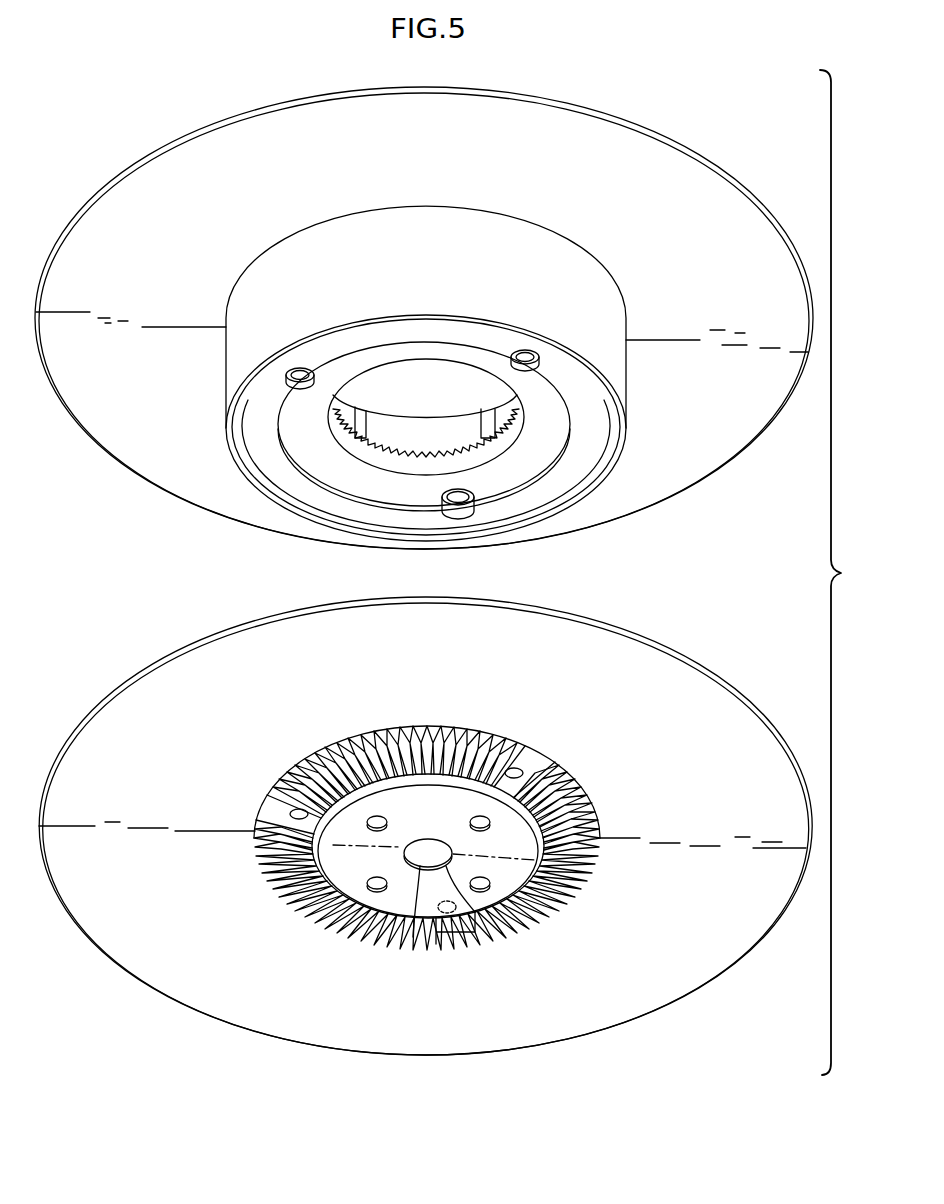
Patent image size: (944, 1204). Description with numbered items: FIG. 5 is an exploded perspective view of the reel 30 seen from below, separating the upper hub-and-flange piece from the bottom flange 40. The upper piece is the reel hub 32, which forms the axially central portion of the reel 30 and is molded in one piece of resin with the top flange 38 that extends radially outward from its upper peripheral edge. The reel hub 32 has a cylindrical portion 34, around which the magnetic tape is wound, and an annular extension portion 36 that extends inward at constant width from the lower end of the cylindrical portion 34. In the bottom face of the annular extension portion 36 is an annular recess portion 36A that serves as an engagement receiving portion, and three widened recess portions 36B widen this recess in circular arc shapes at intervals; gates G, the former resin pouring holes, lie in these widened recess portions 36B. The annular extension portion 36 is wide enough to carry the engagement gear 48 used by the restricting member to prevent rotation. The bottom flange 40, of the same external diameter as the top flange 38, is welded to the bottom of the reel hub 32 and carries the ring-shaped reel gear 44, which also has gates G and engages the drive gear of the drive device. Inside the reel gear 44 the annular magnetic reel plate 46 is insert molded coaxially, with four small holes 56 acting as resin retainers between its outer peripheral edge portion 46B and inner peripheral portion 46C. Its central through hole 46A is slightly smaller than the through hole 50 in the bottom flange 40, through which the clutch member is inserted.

The reel 30 is at (424, 441).
The top flange 38 is at (703, 198).
The reel hub 32 is at (453, 488).
The cylindrical portion 34 is at (447, 243).
The annular extension portion 36 is at (461, 580).
The annular recess portion 36A is at (533, 445).
The widened recess portions 36B is at (466, 513).
The gates G is at (457, 503).
The engagement gear 48 is at (413, 448).
The bottom flange 40 is at (718, 703).
The reel gear 44 is at (438, 841).
The reel plate 46 is at (420, 899).
The through hole 46A is at (413, 937).
The through hole 50 is at (421, 926).
The outer peripheral edge portion 46B is at (525, 782).
The inner peripheral portion 46C is at (475, 932).
The small holes 56 is at (377, 889).